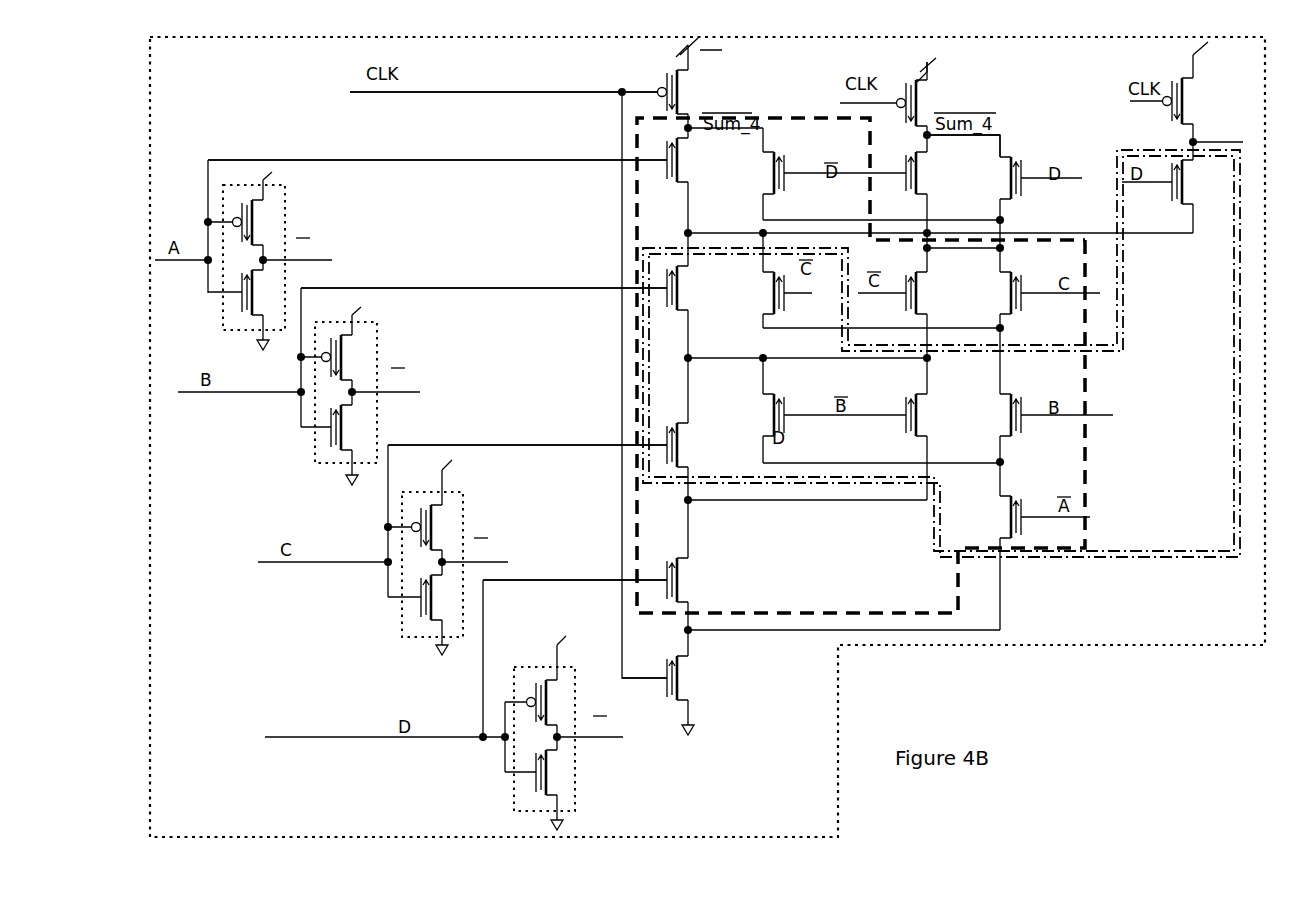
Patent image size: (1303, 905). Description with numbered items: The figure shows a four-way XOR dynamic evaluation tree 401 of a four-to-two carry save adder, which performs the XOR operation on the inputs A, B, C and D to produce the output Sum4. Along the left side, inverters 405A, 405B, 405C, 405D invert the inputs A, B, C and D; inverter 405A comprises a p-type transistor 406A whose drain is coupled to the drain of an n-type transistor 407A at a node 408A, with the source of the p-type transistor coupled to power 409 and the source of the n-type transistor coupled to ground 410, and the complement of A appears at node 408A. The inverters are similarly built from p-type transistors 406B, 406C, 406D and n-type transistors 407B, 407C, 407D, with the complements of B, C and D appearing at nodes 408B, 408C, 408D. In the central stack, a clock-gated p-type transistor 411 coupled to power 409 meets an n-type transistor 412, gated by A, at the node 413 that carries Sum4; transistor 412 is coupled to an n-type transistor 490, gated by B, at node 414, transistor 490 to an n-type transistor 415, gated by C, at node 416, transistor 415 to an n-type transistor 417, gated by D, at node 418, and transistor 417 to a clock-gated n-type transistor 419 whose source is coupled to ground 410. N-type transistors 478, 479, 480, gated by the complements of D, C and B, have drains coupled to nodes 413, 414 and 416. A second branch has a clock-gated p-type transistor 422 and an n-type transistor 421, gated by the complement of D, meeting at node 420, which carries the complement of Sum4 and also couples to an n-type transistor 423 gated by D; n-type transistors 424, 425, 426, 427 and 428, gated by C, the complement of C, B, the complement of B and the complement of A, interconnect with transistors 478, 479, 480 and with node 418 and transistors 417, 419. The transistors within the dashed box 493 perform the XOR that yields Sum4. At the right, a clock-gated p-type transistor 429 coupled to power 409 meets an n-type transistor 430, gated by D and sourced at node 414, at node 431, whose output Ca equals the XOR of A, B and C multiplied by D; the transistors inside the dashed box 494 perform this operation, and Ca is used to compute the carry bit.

The 4-way XOR dynamic evaluation tree 401 is at (880, 650).
The inverter 405A is at (286, 197).
The inverter 405B is at (378, 332).
The inverter 405C is at (464, 498).
The inverter 405D is at (600, 650).
The p-type transistor 406A is at (252, 228).
The p-type transistor 406B is at (345, 357).
The p-type transistor 406C is at (432, 520).
The p-type transistor 406D is at (547, 690).
The n-type transistor 407A is at (258, 293).
The n-type transistor 407B is at (345, 418).
The n-type transistor 407C is at (432, 593).
The n-type transistor 407D is at (547, 768).
The node 408A is at (320, 258).
The node 408B is at (408, 392).
The node 408C is at (490, 560).
The node 408D is at (610, 742).
The power 409 is at (548, 662).
The ground 410 is at (258, 347).
The p-type transistor 411 is at (683, 106).
The n-type transistor 412 is at (686, 170).
The node 413 is at (745, 112).
The node 414 is at (706, 232).
The n-type transistor 415 is at (686, 442).
The node 416 is at (735, 356).
The n-type transistor 417 is at (692, 582).
The node 418 is at (790, 502).
The n-type transistor 419 is at (692, 680).
The node 420 is at (1006, 135).
The n-type transistor 421 is at (918, 176).
The p-type transistor 422 is at (922, 107).
The n-type transistor 423 is at (1020, 195).
The n-type transistor 424 is at (1022, 306).
The n-type transistor 425 is at (920, 302).
The n-type transistor 426 is at (1018, 406).
The n-type transistor 427 is at (920, 418).
The n-type transistor 428 is at (1020, 496).
The p-type transistor 429 is at (1170, 103).
The n-type transistor 430 is at (1185, 178).
The node 431 is at (1198, 135).
The n-type transistor 478 is at (786, 170).
The n-type transistor 479 is at (786, 296).
The n-type transistor 480 is at (788, 408).
The n-type transistor 490 is at (680, 286).
The box 493 is at (970, 592).
The box 494 is at (1132, 560).